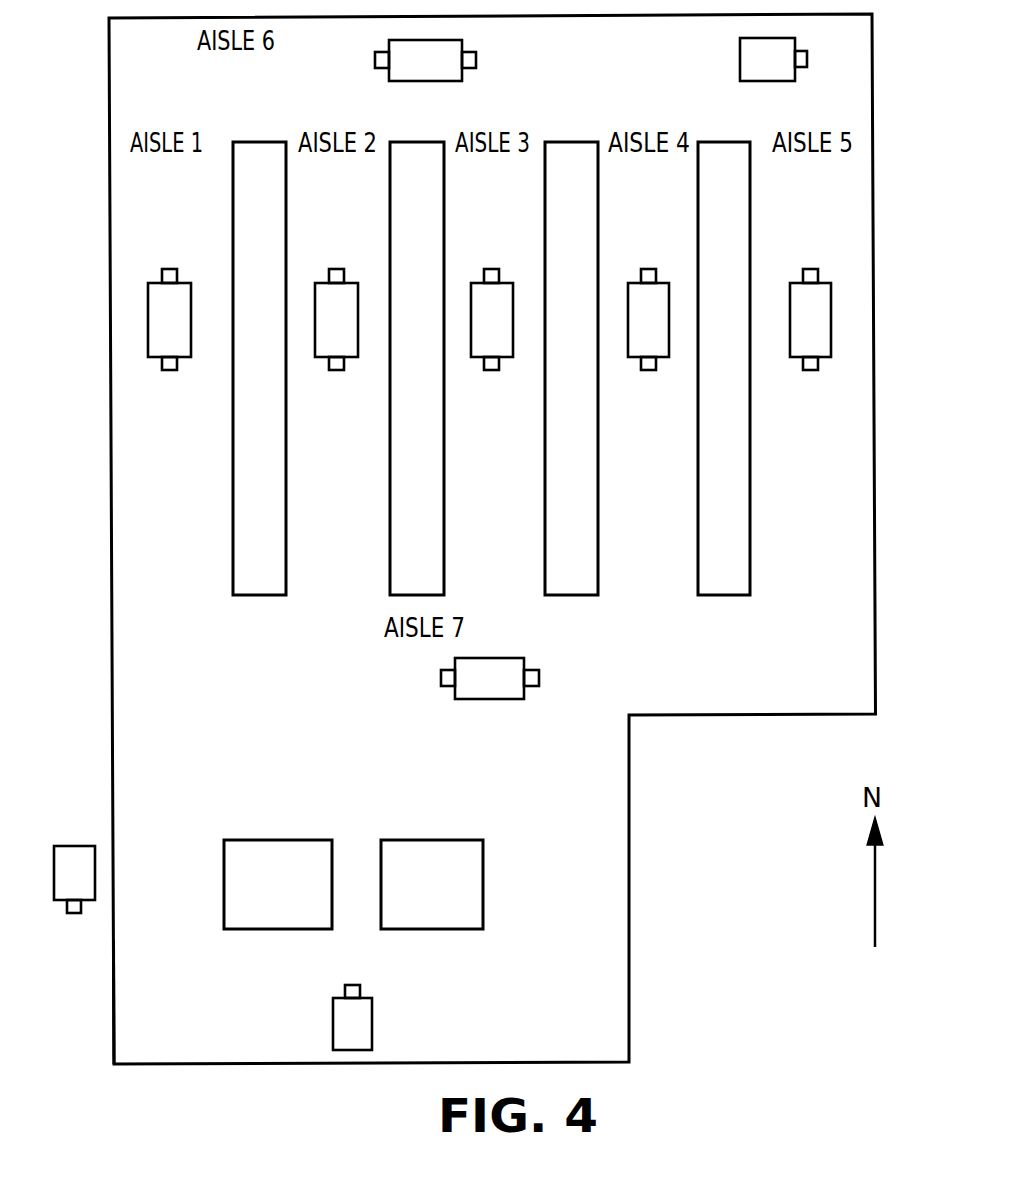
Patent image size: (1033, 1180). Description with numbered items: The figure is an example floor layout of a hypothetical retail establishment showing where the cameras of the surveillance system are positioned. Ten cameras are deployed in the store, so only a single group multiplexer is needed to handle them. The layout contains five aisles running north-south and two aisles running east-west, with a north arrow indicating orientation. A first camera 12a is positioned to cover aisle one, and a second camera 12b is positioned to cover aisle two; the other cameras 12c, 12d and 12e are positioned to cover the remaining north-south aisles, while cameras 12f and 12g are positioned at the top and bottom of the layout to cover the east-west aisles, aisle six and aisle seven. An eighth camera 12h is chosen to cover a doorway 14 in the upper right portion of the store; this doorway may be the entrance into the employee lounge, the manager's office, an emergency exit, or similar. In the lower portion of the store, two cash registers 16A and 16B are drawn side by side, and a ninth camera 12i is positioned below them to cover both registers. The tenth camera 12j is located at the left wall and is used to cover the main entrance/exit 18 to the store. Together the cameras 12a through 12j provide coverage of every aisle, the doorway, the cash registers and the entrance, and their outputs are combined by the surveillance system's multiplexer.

The first camera 12a is at (178, 296).
The second camera 12b is at (346, 297).
The camera 12c is at (499, 300).
The camera 12d is at (657, 298).
The camera 12e is at (819, 304).
The camera 12f is at (440, 67).
The camera 12g is at (514, 668).
The eighth camera 12h is at (767, 66).
The ninth camera 12i is at (363, 1024).
The tenth camera 12j is at (74, 858).
The doorway 14 is at (829, 107).
The cash register 16A is at (315, 838).
The cash register 16B is at (466, 838).
The store wall / entrance 18 is at (111, 967).